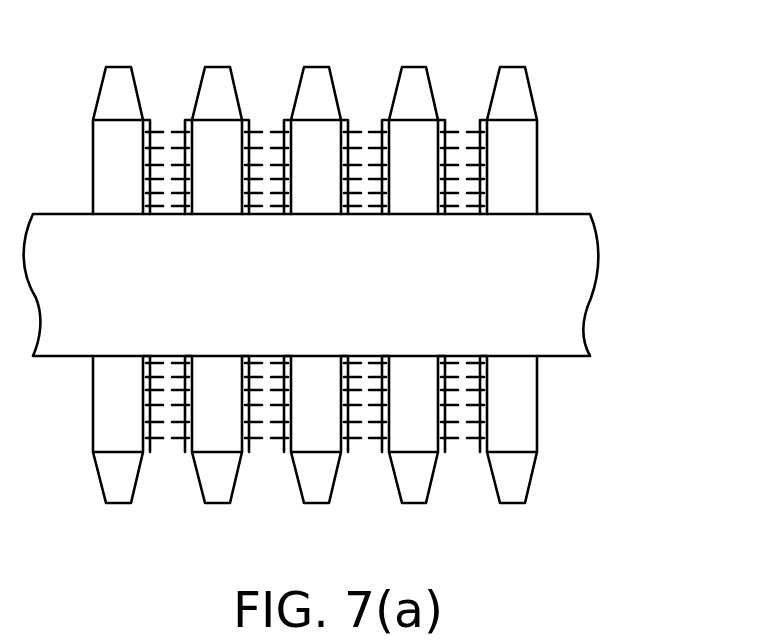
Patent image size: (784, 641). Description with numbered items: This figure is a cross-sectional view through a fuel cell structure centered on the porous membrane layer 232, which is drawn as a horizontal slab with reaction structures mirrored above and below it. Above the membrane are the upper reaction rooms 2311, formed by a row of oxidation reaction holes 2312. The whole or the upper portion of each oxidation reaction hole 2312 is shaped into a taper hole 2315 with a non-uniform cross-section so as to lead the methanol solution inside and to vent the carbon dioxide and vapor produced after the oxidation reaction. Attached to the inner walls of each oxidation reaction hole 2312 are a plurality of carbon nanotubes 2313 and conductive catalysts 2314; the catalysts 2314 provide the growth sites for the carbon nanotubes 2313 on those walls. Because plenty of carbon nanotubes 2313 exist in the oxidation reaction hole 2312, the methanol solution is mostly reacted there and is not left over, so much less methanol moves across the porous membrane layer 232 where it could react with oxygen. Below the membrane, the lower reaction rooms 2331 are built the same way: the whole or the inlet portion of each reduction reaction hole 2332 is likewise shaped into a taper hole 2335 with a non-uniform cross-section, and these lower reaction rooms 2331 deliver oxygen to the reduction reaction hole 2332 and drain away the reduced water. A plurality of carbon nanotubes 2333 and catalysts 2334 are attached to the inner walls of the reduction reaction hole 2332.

The porous membrane layer 232 is at (575, 285).
The upper reaction rooms 2311 is at (389, 110).
The oxidation reaction hole 2312 is at (170, 125).
The carbon nanotubes 2313 is at (277, 126).
The conductive catalysts 2314 is at (387, 120).
The taper hole 2315 is at (137, 93).
The lower reaction rooms 2331 is at (389, 464).
The reduction reaction hole 2332 is at (170, 447).
The carbon nanotubes 2333 is at (277, 446).
The catalysts 2334 is at (385, 452).
The taper hole 2335 is at (137, 477).